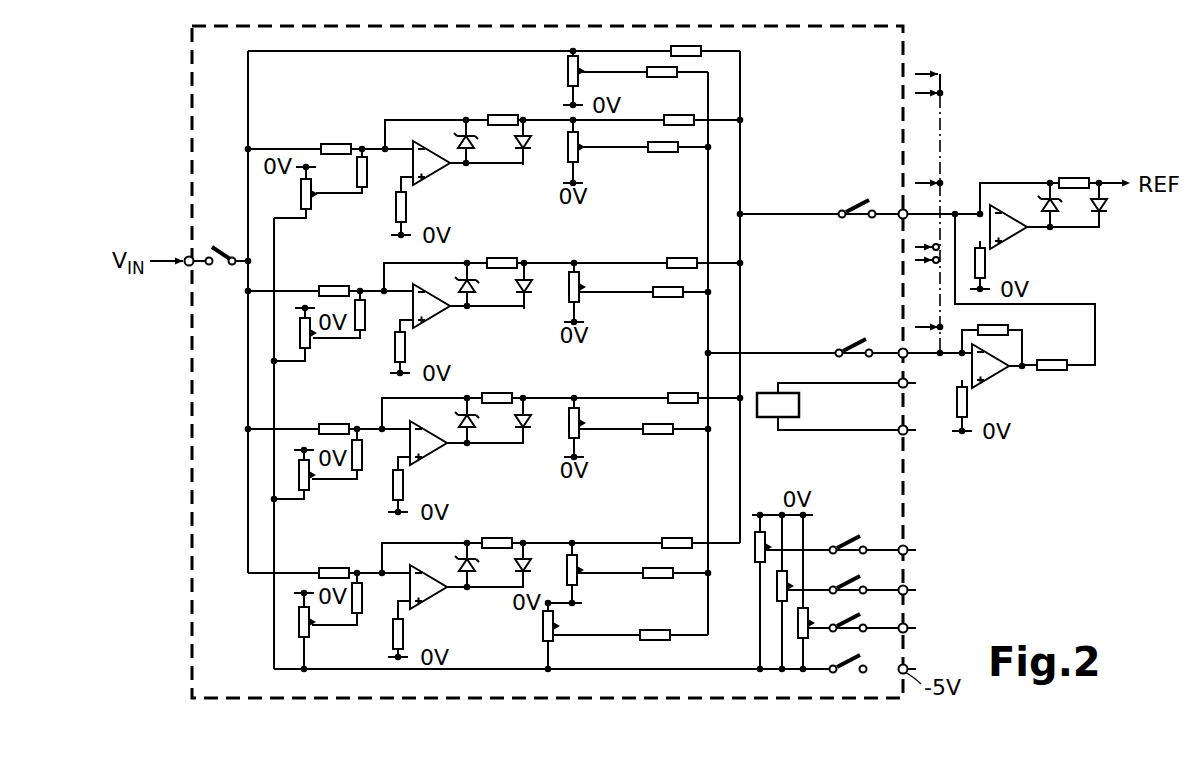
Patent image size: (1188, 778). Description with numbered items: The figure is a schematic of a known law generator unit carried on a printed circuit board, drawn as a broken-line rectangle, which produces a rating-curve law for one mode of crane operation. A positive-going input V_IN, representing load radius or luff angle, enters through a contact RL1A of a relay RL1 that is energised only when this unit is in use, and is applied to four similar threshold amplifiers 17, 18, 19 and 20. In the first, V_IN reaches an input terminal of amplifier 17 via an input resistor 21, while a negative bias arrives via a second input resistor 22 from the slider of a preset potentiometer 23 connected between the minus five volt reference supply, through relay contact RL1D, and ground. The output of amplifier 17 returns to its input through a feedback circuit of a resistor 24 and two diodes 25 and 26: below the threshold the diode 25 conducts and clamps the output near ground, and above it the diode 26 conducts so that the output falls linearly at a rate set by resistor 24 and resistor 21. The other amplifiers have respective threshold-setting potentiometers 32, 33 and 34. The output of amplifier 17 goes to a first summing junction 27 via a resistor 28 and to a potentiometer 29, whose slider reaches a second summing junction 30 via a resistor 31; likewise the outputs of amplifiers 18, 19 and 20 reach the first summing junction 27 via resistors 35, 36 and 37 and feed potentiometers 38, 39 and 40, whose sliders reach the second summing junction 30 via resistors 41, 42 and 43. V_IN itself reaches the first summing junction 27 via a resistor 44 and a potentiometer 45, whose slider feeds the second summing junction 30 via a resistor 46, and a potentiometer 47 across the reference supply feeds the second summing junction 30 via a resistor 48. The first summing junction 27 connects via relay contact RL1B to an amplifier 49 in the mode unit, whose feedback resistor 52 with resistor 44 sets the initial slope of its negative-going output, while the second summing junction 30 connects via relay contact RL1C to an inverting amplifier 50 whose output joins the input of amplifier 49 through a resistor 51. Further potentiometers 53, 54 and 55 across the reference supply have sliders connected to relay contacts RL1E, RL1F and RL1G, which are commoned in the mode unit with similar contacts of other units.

The threshold amplifier 17 is at (421, 142).
The threshold amplifier 18 is at (422, 284).
The threshold amplifier 19 is at (413, 419).
The threshold amplifier 20 is at (418, 566).
The input resistor 21 is at (337, 144).
The second input resistor 22 is at (367, 173).
The preset potentiometer 23 is at (301, 199).
The feedback resistor 24 is at (503, 115).
The diode 25 is at (472, 143).
The diode 26 is at (529, 143).
The first summing junction 27 is at (742, 158).
The resistor 28 is at (683, 115).
The potentiometer 29 is at (569, 152).
The second summing junction 30 is at (707, 200).
The resistor 31 is at (655, 143).
The threshold-setting potentiometer 32 is at (301, 323).
The threshold-setting potentiometer 33 is at (300, 461).
The threshold-setting potentiometer 34 is at (298, 624).
The resistor 35 is at (684, 258).
The resistor 36 is at (683, 393).
The resistor 37 is at (677, 538).
The potentiometer 38 is at (569, 275).
The potentiometer 39 is at (569, 412).
The potentiometer 40 is at (567, 562).
The resistor 41 is at (655, 287).
The resistor 42 is at (654, 424).
The resistor 43 is at (654, 568).
The resistor 44 is at (689, 45).
The potentiometer 45 is at (567, 72).
The resistor 46 is at (661, 78).
The potentiometer 47 is at (543, 634).
The resistor 48 is at (656, 628).
The amplifier 49 is at (1012, 235).
The inverting amplifier 50 is at (993, 376).
The resistor 51 is at (1052, 359).
The feedback resistor 52 is at (1074, 177).
The potentiometer 53 is at (755, 544).
The potentiometer 54 is at (777, 596).
The potentiometer 55 is at (798, 638).
The relay RL1 is at (799, 405).
The relay contact RL1A is at (197, 240).
The relay contact RL1B is at (863, 199).
The relay contact RL1C is at (852, 339).
The relay contact RL1D is at (866, 655).
The relay contact RL1E is at (851, 529).
The relay contact RL1F is at (866, 575).
The relay contact RL1G is at (866, 614).